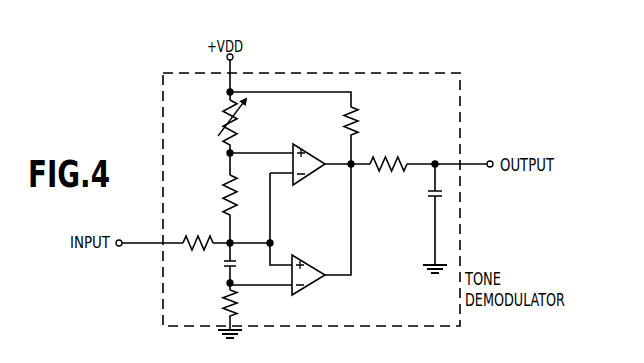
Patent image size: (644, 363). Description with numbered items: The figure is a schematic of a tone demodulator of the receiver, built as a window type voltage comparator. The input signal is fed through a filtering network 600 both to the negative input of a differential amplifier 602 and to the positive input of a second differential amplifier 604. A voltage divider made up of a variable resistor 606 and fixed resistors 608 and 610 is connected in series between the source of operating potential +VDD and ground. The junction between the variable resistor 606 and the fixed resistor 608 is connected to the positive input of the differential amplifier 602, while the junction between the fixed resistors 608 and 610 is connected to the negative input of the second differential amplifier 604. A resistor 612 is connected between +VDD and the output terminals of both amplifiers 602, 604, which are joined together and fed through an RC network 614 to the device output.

The filtering network 600 is at (220, 251).
The differential amplifier 602 is at (300, 183).
The second differential amplifier 604 is at (300, 257).
The variable resistor 606 is at (220, 118).
The fixed resistor 608 is at (222, 190).
The fixed resistor 610 is at (222, 298).
The resistor 612 is at (357, 130).
The RC network 614 is at (414, 181).